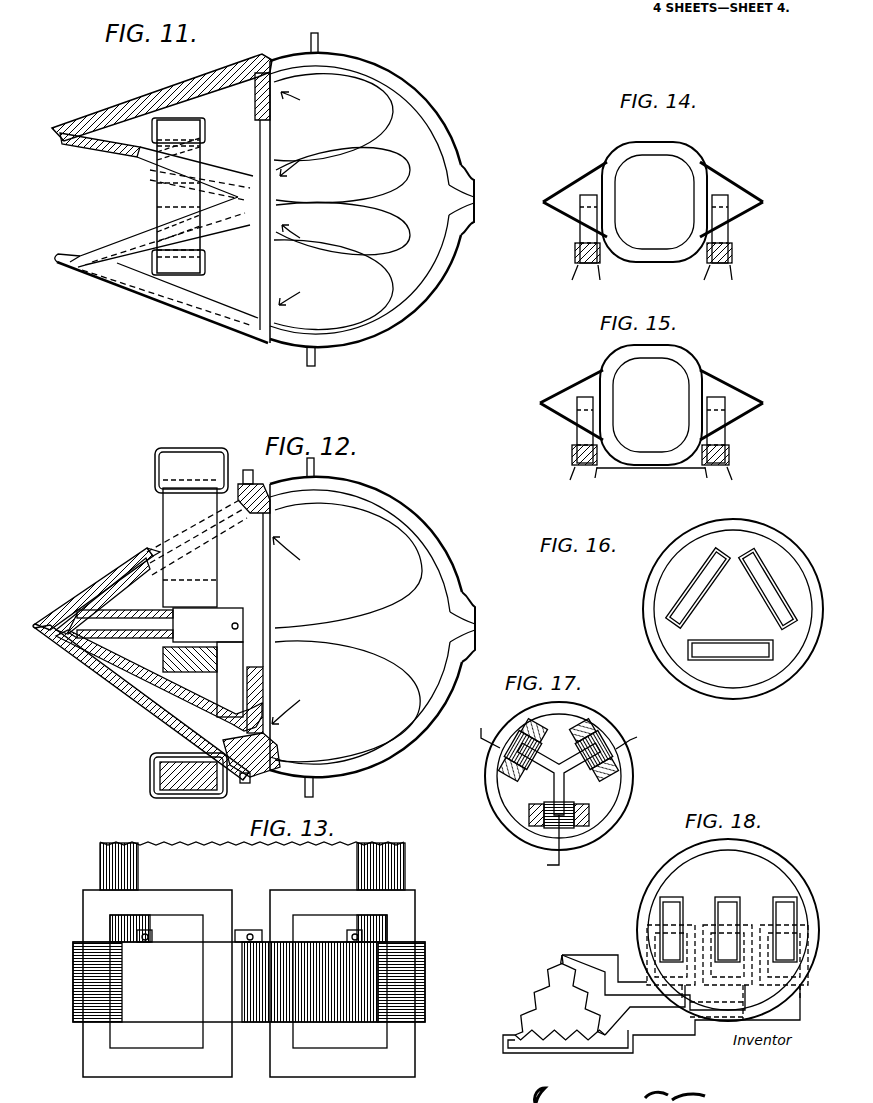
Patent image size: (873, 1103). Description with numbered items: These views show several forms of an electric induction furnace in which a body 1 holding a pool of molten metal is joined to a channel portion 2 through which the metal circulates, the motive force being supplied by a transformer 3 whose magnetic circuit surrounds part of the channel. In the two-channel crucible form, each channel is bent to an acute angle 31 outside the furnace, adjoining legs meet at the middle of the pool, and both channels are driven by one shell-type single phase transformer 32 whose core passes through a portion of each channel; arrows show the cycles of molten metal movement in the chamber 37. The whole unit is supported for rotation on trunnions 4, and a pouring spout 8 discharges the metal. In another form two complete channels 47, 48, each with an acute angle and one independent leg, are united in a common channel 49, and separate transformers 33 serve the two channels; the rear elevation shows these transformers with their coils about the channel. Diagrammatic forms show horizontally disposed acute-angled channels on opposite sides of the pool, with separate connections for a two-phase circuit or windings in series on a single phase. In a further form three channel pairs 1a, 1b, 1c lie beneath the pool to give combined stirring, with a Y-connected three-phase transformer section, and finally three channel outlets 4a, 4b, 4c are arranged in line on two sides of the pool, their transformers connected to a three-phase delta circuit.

In FIG. 11, the body 1 is at (411, 87).
In FIG. 12, the body 1 is at (342, 626).
In FIG. 13, the body 1 is at (252, 866).
In FIG. 14, the body 1 is at (686, 152).
In FIG. 15, the body 1 is at (690, 368).
In FIG. 16, the body 1 is at (732, 535).
In FIG. 18, the body 1 is at (640, 905).
In FIG. 16, the electrode plate 1a is at (763, 578).
In FIG. 16, the electrode plate 1b is at (690, 588).
In FIG. 16, the electrode plate 1c is at (730, 656).
In FIG. 11, the channel portion 2 is at (142, 103).
In FIG. 13, the channel portion 2 is at (249, 982).
In FIG. 14, the channel portion 2 is at (580, 182).
In FIG. 15, the channel portion 2 is at (570, 390).
In FIG. 17, the channel portion 2 is at (590, 731).
In FIG. 17, the transformer 3 is at (630, 779).
In FIG. 11, the acute angle turn 31 is at (72, 140).
In FIG. 11, the single phase transformer 32 is at (163, 199).
In FIG. 12, the separate transformers 33 is at (197, 623).
In FIG. 13, the separate transformers 33 is at (249, 983).
In FIG. 14, the separate transformers 33 is at (758, 233).
In FIG. 15, the separate transformers 33 is at (752, 430).
In FIG. 11, the circulation chamber 37 is at (342, 202).
In FIG. 12, the circulation chamber 37 is at (347, 632).
In FIG. 11, the trunnions 4 is at (318, 40).
In FIG. 12, the trunnions 4 is at (314, 466).
In FIG. 18, the electrode 4a is at (668, 903).
In FIG. 18, the electrode 4b is at (727, 905).
In FIG. 18, the electrode 4c is at (783, 903).
In FIG. 11, the pouring spout 8 is at (470, 201).
In FIG. 12, the pouring spout 8 is at (478, 624).
In FIG. 12, the complete channel 47 is at (112, 668).
In FIG. 12, the complete channel 48 is at (100, 600).
In FIG. 12, the common channel 49 is at (57, 636).